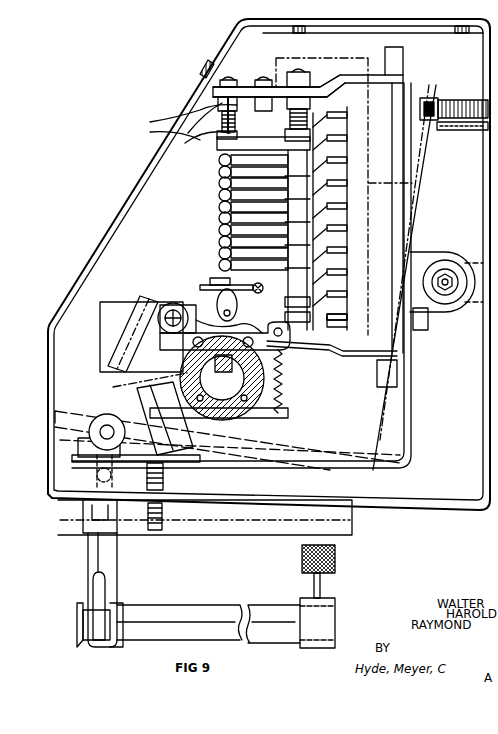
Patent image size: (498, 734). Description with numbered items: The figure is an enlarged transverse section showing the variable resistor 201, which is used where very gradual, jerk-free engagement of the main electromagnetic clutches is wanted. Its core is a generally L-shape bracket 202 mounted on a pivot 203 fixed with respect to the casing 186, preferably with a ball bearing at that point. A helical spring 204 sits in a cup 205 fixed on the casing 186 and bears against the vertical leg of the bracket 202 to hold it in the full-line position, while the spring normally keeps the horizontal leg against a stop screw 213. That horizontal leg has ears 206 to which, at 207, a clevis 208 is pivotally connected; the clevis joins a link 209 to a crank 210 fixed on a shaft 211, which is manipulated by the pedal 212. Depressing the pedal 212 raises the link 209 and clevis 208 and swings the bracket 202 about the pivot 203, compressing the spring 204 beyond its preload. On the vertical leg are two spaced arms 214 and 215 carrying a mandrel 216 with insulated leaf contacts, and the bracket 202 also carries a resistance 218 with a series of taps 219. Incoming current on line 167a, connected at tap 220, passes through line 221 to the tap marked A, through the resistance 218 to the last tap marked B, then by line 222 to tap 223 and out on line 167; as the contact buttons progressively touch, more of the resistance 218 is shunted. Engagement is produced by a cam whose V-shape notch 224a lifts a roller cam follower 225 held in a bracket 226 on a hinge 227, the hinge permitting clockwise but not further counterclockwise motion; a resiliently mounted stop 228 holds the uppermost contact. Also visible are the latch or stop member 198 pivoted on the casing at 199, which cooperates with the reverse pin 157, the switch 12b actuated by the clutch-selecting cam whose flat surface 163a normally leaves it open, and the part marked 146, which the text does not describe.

The casing 186 is at (172, 118).
The L-shape bracket 202 is at (410, 396).
The resistance 218 is at (392, 216).
The arm 215 is at (340, 75).
The line 221 is at (412, 183).
The tap B is at (333, 118).
The tap A is at (344, 325).
The taps 219 is at (335, 318).
The mandrel 216 is at (270, 86).
The tap 223 is at (233, 80).
The tap 220 is at (255, 80).
The line 222 is at (262, 112).
The line 167 is at (195, 103).
The line 167a is at (190, 145).
The variable resistor 201 is at (228, 233).
The stop 228 is at (218, 160).
The pivot 199 is at (183, 300).
The bracket 226 is at (216, 305).
The roller cam follower 225 is at (229, 322).
The hinge 227 is at (258, 293).
The V-shape notch 224a is at (225, 329).
The pin 157 is at (283, 393).
The latch or stop member 198 is at (283, 362).
The arm 214 is at (364, 356).
The helical spring 204 is at (437, 115).
The cup 205 is at (455, 99).
The pivot 203 is at (446, 270).
The bar 146 is at (152, 300).
The flat surface 163a is at (140, 386).
The pivotal connection 207 is at (98, 420).
The ears 206 is at (80, 443).
The switch 12b is at (182, 452).
The stop screw 213 is at (147, 477).
The clevis 208 is at (95, 505).
The link 209 is at (88, 583).
The crank 210 is at (98, 612).
The shaft 211 is at (194, 598).
The pedal 212 is at (328, 558).